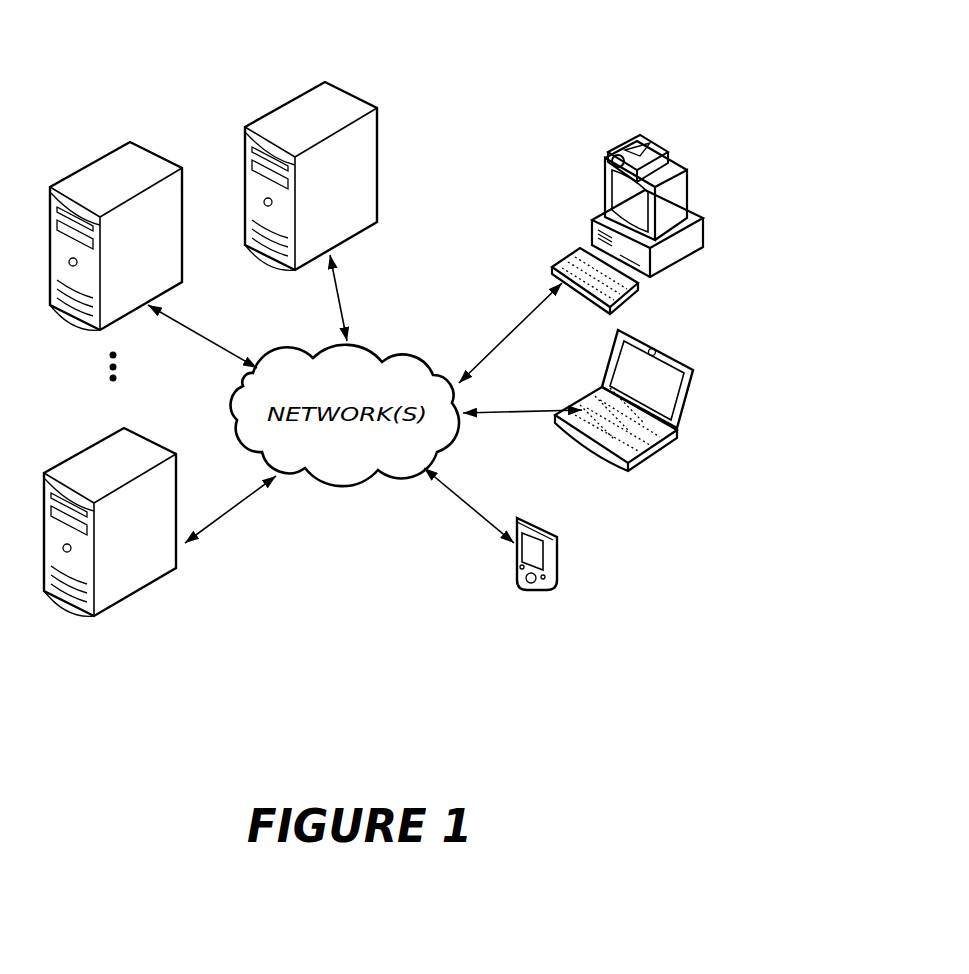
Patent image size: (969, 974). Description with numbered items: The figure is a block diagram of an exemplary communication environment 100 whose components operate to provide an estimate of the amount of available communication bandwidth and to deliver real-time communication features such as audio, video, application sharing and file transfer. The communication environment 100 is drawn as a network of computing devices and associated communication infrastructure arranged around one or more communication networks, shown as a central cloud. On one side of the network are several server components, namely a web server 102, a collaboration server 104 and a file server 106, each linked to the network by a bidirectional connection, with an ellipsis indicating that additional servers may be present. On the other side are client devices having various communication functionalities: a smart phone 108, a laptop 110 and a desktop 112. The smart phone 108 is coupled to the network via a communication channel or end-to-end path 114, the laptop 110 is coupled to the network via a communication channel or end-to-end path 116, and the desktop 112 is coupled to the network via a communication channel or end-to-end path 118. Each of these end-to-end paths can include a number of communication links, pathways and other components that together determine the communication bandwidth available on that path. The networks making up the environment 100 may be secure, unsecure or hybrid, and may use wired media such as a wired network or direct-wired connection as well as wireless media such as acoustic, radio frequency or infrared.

The communication environment 100 is at (540, 58).
The web server 102 is at (328, 86).
The collaboration server 104 is at (132, 141).
The file server 106 is at (132, 426).
The smart phone 108 is at (557, 530).
The laptop 110 is at (693, 370).
The desktop 112 is at (697, 217).
The communication channel or end-to-end path 114 is at (450, 492).
The communication channel or end-to-end path 116 is at (525, 414).
The communication channel or end-to-end path 118 is at (498, 352).